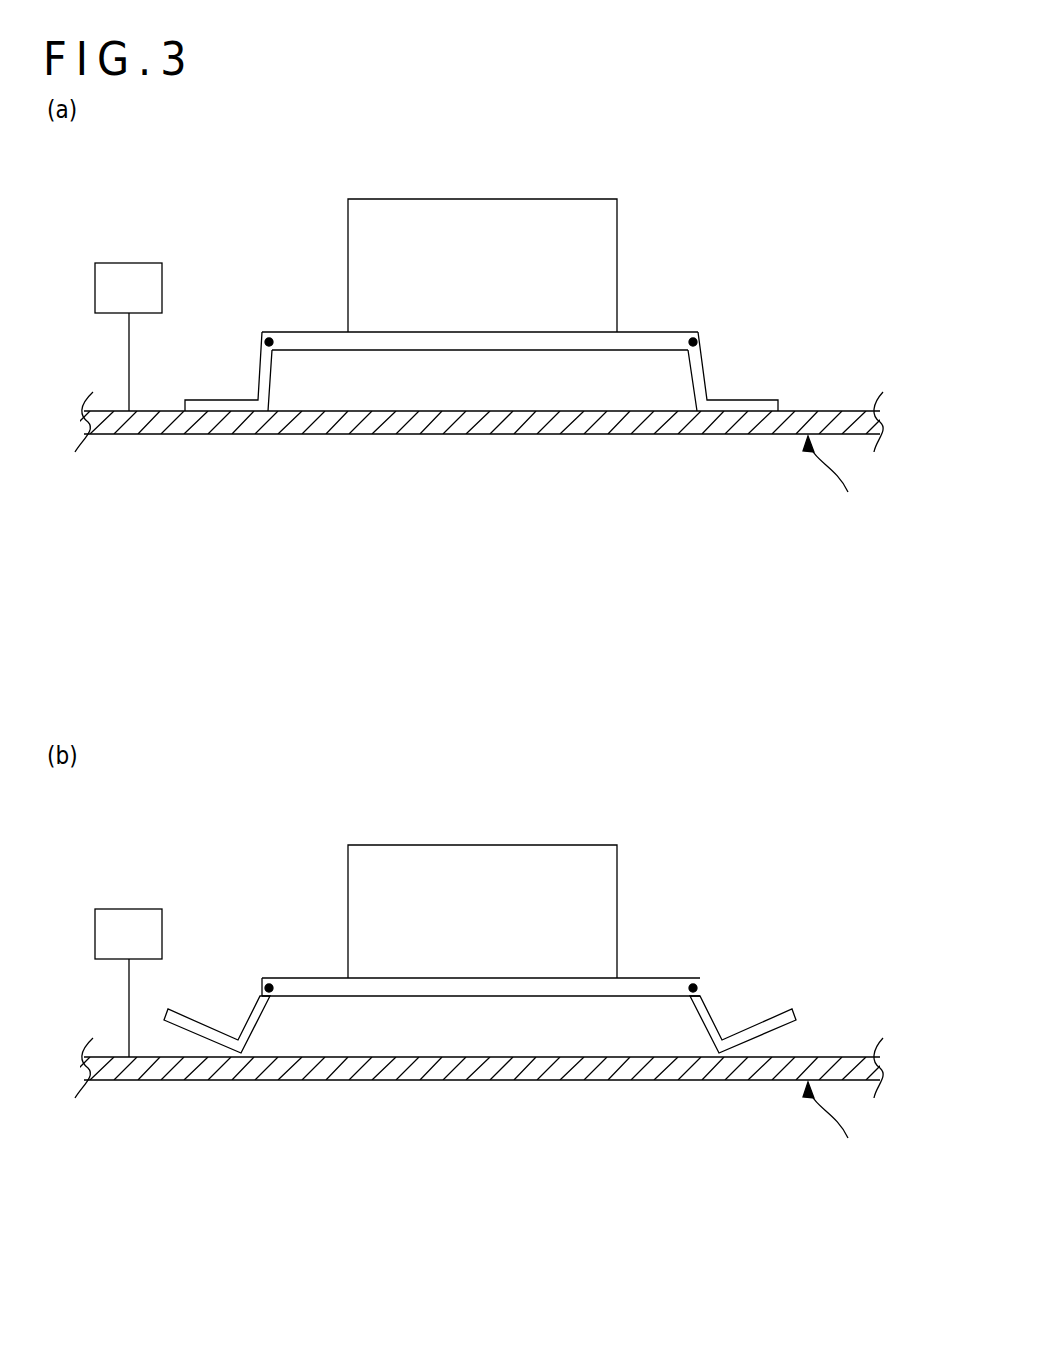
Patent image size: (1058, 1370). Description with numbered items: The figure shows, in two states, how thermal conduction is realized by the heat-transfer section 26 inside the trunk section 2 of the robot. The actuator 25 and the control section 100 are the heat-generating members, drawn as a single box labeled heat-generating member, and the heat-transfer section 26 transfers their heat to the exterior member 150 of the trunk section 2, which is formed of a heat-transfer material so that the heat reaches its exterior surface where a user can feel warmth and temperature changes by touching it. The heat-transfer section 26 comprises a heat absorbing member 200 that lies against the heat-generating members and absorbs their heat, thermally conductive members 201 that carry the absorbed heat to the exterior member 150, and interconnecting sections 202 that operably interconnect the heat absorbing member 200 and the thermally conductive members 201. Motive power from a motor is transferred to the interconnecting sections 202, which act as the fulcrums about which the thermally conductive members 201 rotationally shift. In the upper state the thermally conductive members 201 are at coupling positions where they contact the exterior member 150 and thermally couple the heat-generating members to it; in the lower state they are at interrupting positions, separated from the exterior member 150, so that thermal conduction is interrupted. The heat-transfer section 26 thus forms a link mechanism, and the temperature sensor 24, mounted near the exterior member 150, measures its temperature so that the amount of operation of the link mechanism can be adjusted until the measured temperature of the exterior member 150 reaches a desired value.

The trunk section 2 is at (509, 793).
The temperature sensor 24 is at (129, 262).
The actuator 25 is at (482, 563).
The control section 100 is at (497, 176).
The heat-transfer section 26 is at (480, 586).
The exterior member 150 is at (683, 436).
The heat absorbing member 200 is at (655, 339).
The thermally conductive members 201 is at (222, 400).
The interconnecting sections 202 is at (262, 339).